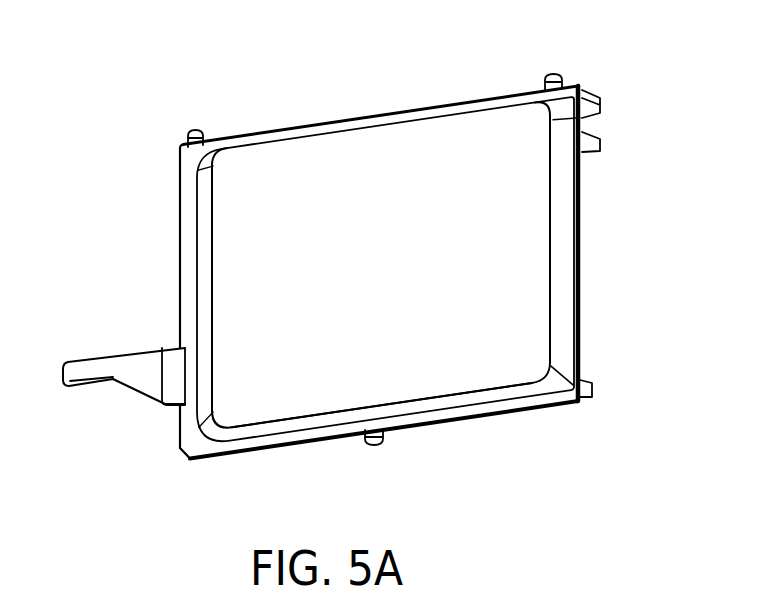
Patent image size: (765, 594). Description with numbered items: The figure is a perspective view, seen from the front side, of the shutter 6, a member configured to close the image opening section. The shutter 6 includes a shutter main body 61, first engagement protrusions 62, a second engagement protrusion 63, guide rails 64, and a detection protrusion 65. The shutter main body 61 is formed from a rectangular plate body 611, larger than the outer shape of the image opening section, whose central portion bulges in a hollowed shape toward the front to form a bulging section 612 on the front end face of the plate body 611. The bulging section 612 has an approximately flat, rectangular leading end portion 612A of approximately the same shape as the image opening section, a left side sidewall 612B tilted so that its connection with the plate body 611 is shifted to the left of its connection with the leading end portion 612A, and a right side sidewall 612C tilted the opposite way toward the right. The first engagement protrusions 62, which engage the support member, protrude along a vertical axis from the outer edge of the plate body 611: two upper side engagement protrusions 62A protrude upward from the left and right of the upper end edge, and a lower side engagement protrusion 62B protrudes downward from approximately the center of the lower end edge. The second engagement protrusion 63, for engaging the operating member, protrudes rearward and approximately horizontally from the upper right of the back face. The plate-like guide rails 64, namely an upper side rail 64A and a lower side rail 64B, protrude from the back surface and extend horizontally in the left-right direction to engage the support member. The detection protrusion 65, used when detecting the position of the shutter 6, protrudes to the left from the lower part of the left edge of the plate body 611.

The shutter 6 is at (70, 88).
The shutter main body 61 is at (417, 37).
The plate body 611 is at (330, 127).
The bulging section 612 is at (400, 135).
The leading end portion 612A is at (297, 387).
The left side sidewall 612B is at (207, 240).
The right side sidewall 612C is at (567, 225).
The first engagement protrusions 62 is at (376, 246).
The upper side engagement protrusions 62A is at (195, 130).
The lower side engagement protrusion 62B is at (383, 440).
The second engagement protrusion 63 is at (600, 97).
The guide rails 64 is at (655, 266).
The upper side rail 64A is at (600, 137).
The lower side rail 64B is at (590, 383).
The detection protrusion 65 is at (95, 368).